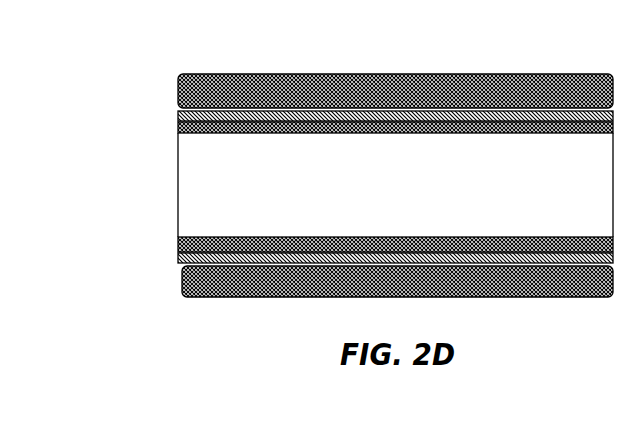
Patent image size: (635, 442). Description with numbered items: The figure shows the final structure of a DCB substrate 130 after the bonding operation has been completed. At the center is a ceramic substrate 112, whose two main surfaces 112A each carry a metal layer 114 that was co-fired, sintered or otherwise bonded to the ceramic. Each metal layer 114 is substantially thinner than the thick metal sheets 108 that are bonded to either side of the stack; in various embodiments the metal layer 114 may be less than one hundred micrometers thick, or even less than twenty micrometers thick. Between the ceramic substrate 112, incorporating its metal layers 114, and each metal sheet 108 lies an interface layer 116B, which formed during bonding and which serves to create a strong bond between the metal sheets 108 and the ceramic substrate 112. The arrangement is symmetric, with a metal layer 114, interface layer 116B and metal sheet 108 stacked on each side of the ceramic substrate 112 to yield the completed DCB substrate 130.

The metal sheets 108 is at (178, 80).
The interface layer 116B is at (178, 115).
The metal layer 114 is at (178, 127).
The ceramic substrate 112 is at (180, 192).
The main surfaces 112A is at (405, 140).
The DCB substrate 130 is at (310, 185).